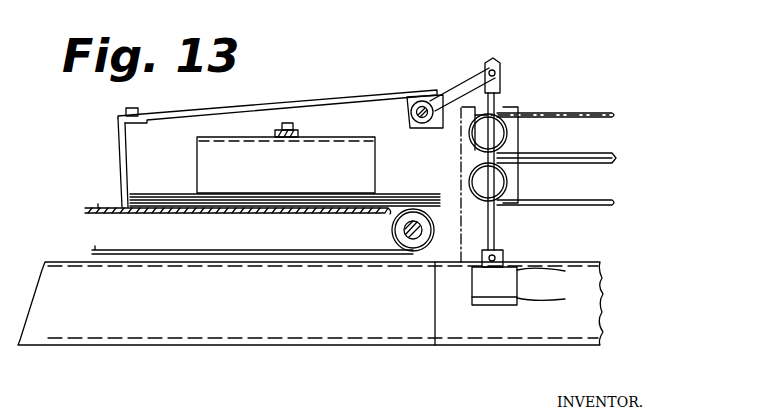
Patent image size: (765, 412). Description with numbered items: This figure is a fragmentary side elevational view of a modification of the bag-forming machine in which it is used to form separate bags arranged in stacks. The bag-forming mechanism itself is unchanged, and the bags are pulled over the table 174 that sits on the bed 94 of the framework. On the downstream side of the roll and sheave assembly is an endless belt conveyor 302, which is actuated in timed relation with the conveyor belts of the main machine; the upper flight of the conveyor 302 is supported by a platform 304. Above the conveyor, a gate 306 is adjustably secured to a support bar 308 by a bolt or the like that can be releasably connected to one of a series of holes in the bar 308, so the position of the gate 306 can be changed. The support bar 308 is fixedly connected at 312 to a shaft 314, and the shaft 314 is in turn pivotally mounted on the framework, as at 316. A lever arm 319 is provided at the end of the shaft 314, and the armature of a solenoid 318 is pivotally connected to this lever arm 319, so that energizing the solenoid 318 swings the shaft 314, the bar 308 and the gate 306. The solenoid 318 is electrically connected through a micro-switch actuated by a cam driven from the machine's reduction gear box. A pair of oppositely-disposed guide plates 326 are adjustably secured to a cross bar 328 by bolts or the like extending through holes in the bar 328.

The bed 94 is at (487, 317).
The table 174 is at (98, 308).
The endless belt conveyor 302 is at (120, 252).
The platform 304 is at (318, 212).
The gate 306 is at (121, 149).
The support bar 308 is at (270, 105).
The fixed connection 312 is at (418, 128).
The shaft 314 is at (418, 107).
The pivotal mounting 316 is at (498, 72).
The solenoid 318 is at (498, 282).
The lever arm 319 is at (455, 92).
The guide plates 326 is at (223, 163).
The cross bar 328 is at (298, 133).